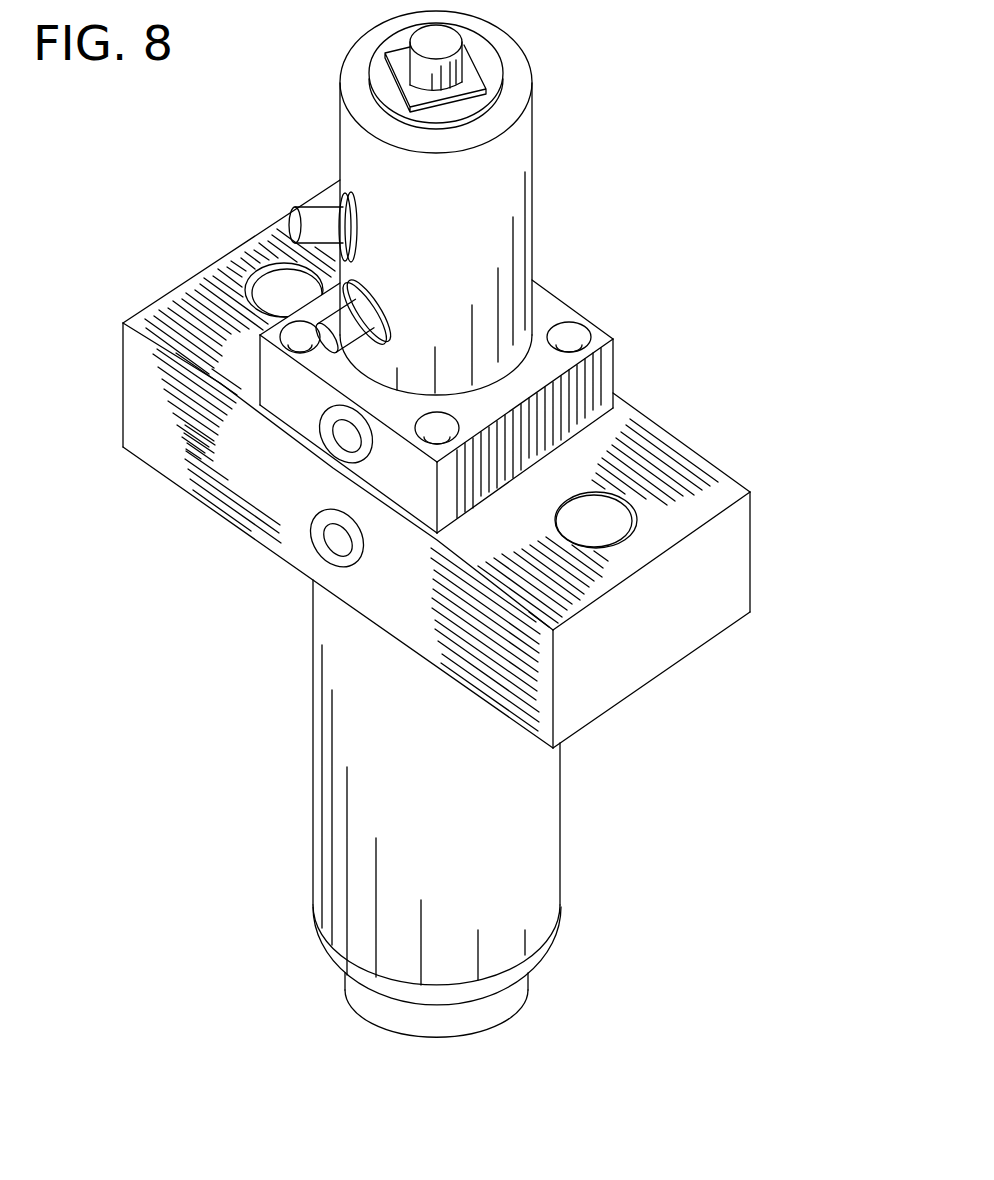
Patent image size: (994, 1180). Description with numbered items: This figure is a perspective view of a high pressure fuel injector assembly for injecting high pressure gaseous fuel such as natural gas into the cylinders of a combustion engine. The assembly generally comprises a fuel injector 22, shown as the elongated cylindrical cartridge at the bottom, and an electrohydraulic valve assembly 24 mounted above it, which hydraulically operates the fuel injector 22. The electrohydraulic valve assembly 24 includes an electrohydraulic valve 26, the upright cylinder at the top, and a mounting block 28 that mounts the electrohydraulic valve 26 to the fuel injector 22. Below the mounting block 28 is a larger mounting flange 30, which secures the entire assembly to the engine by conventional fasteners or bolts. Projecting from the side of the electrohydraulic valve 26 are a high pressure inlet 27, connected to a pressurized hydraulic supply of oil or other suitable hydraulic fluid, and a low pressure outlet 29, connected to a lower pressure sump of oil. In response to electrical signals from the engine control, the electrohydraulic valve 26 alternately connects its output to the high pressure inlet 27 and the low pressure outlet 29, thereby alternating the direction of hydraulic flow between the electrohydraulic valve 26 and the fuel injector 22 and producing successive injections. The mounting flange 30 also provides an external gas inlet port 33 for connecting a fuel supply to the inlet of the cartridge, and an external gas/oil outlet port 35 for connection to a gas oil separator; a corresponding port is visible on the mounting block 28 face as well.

The fuel injector 22 is at (515, 832).
The electrohydraulic valve assembly 24 is at (672, 272).
The electrohydraulic valve 26 is at (503, 202).
The high pressure inlet 27 is at (320, 223).
The mounting block 28 is at (588, 405).
The low pressure outlet 29 is at (343, 330).
The mounting flange 30 is at (712, 572).
The external gas inlet port 33 is at (336, 540).
The external gas/oil outlet port 35 is at (350, 434).